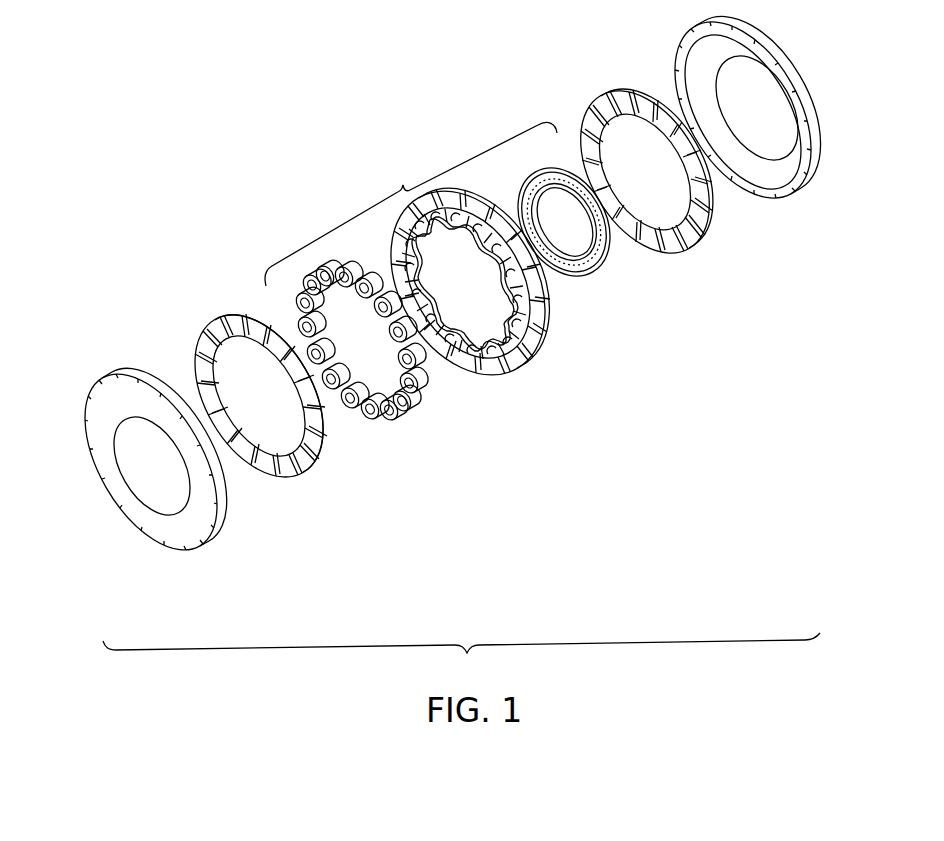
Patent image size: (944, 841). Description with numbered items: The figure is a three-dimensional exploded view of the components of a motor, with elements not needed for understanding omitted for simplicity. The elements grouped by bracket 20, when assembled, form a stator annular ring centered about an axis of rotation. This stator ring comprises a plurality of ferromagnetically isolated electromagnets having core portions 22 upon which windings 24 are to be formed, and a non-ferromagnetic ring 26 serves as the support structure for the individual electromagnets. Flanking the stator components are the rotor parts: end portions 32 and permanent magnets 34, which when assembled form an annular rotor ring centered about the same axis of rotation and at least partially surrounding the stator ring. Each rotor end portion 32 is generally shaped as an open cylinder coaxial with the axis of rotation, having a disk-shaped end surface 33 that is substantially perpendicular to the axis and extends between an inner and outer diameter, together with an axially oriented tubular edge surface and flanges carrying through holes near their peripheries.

The bracket 20 is at (411, 204).
The core portions 22 is at (507, 368).
The windings 24 is at (398, 415).
The non-ferromagnetic ring 26 is at (587, 270).
The end portions 32 is at (195, 547).
The end surface 33 is at (112, 439).
The permanent magnets 34 is at (300, 475).